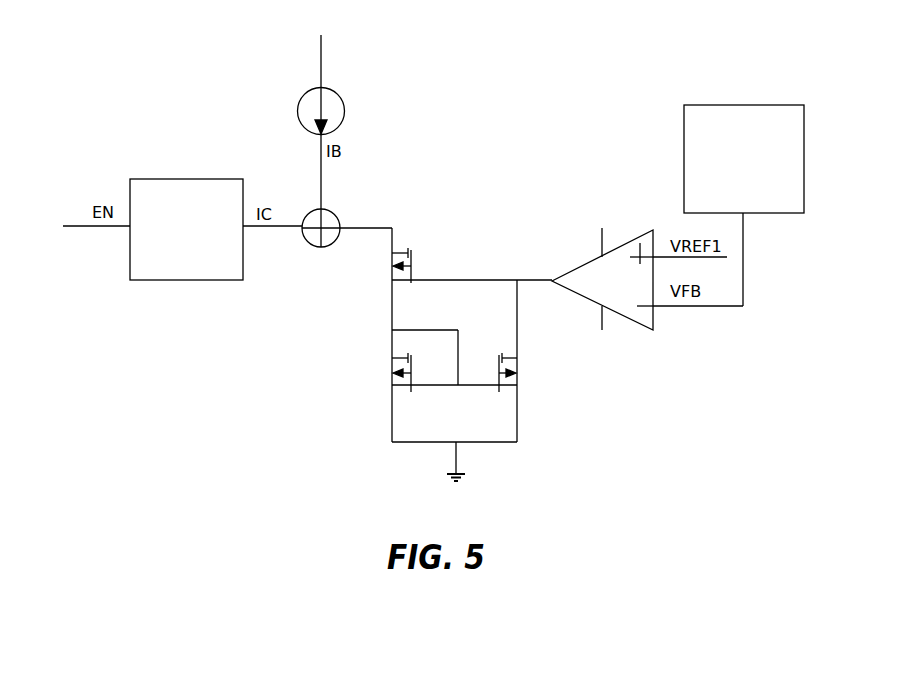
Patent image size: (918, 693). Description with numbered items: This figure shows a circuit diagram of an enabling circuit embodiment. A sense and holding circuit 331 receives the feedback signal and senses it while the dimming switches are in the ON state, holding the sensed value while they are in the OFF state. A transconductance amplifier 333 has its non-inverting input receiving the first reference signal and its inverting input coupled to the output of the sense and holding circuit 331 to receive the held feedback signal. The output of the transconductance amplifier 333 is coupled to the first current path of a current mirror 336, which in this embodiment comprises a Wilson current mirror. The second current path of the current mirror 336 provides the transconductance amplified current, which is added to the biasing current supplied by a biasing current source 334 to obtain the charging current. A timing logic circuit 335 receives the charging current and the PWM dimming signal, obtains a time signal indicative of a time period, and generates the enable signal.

The sense and holding circuit 331 is at (744, 159).
The transconductance amplifier 333 is at (644, 328).
The biasing current source 334 is at (343, 101).
The timing logic circuit 335 is at (186, 229).
The current mirror 336 is at (480, 256).